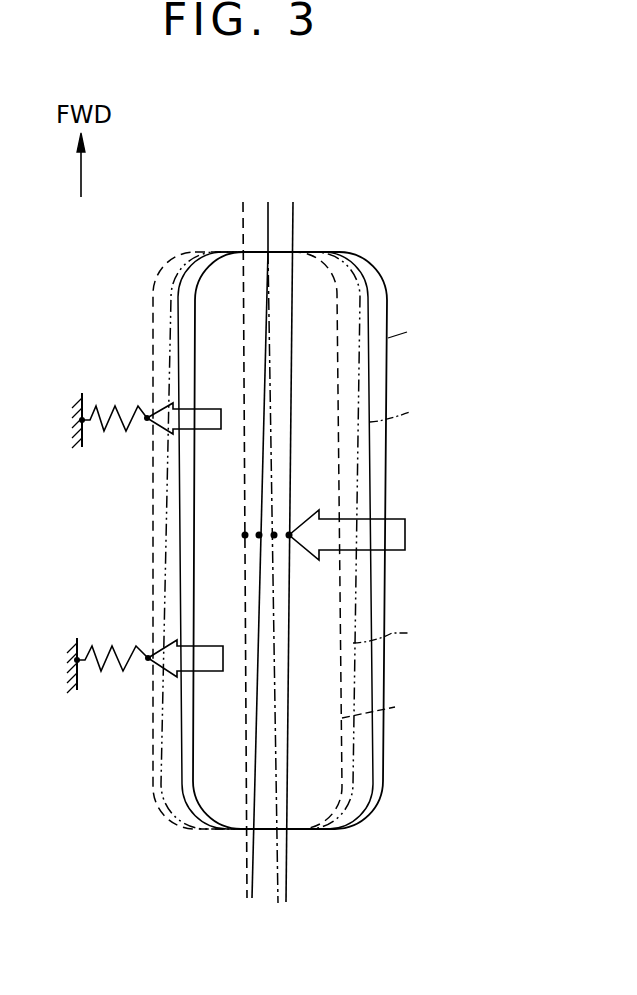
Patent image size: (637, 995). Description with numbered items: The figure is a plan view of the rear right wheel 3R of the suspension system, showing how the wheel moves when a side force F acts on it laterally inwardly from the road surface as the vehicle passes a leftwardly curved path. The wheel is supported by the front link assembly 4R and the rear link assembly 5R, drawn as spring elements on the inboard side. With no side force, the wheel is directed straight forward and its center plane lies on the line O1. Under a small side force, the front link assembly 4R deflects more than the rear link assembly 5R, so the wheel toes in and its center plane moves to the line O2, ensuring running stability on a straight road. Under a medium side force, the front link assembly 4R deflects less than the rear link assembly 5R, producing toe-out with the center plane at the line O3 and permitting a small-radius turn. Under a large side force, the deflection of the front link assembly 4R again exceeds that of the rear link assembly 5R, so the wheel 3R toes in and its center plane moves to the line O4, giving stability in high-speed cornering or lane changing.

The rear right wheel 3R is at (405, 268).
The front link assembly 4R is at (114, 404).
The rear link assembly 5R is at (97, 645).
The line O1 is at (287, 863).
The line O2 is at (284, 592).
The line O3 is at (254, 866).
The line O4 is at (245, 862).